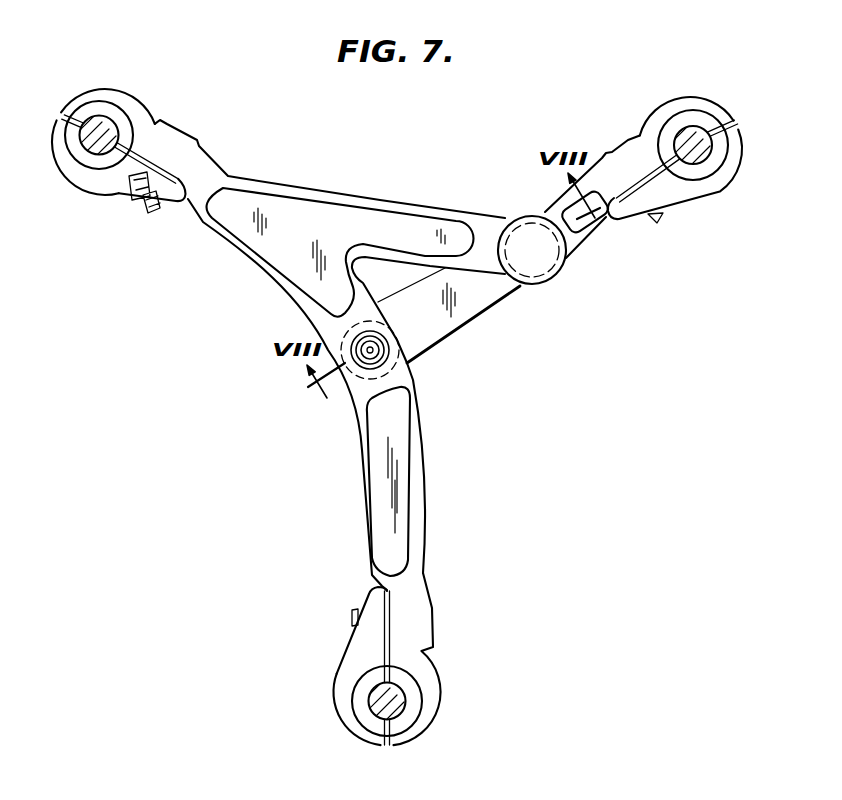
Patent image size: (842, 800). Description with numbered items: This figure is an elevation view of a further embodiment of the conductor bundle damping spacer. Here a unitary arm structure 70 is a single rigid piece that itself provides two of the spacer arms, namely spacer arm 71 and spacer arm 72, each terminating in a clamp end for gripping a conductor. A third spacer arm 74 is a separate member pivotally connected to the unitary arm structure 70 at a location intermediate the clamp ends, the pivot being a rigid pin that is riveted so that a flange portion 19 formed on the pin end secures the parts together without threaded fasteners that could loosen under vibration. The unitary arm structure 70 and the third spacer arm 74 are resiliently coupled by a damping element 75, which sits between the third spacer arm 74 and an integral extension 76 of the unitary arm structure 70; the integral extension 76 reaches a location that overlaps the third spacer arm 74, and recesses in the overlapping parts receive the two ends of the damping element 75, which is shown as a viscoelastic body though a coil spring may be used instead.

The flange portion 19 is at (382, 357).
The unitary arm structure 70 is at (353, 408).
The spacer arm 71 is at (258, 264).
The spacer arm 72 is at (367, 523).
The third spacer arm 74 is at (487, 312).
The damping element 75 is at (560, 278).
The integral extension 76 is at (422, 204).